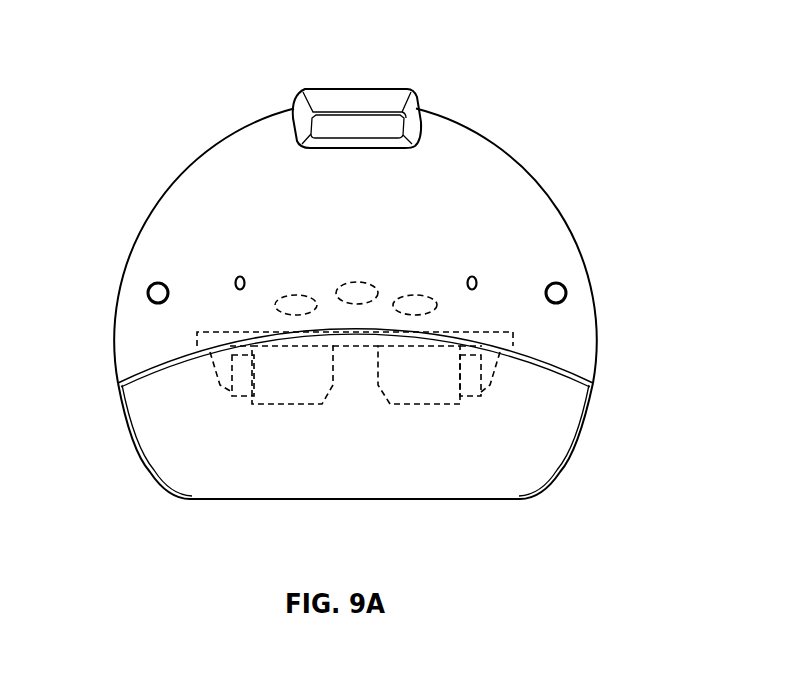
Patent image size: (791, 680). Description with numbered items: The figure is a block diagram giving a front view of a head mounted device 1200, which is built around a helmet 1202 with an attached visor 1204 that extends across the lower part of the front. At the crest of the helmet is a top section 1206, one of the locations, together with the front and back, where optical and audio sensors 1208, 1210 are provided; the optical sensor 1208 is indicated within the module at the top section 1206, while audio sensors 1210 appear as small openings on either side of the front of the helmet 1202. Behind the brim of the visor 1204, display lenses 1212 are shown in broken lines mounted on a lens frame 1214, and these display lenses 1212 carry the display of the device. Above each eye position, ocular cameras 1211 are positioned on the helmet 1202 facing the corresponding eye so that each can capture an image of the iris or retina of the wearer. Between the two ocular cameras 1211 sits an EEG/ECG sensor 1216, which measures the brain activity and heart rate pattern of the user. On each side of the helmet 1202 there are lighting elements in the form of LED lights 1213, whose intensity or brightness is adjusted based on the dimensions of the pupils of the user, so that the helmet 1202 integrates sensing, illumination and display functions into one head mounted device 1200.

The head mounted device 1200 is at (150, 38).
The helmet 1202 is at (486, 129).
The visor 1204 is at (440, 488).
The top section 1206 is at (357, 88).
The optical sensor 1208 is at (348, 128).
The audio sensor 1210 is at (239, 276).
The ocular camera 1211 is at (293, 293).
The display lens 1212 is at (287, 426).
The LED light 1213 is at (158, 282).
The lens frame 1214 is at (227, 388).
The EEG/ECG sensor 1216 is at (357, 282).